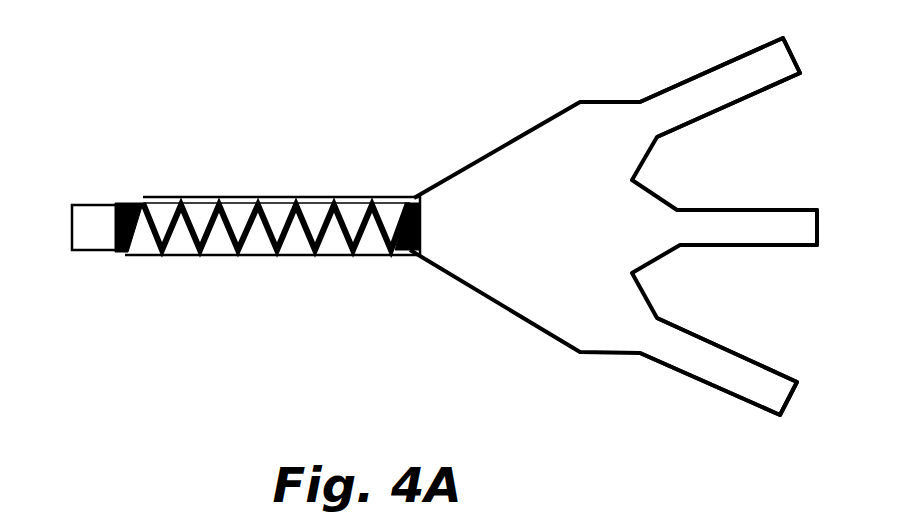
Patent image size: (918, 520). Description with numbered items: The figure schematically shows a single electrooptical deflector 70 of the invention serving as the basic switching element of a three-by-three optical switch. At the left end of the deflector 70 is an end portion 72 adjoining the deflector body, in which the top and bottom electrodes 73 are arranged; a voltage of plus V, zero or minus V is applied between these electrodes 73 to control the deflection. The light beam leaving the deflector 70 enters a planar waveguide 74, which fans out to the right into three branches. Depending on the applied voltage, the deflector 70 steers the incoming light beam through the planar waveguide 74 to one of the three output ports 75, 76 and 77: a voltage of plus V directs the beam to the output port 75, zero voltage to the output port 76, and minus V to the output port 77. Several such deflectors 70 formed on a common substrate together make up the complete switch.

The electrooptical deflector 70 is at (353, 305).
The end block 72 is at (93, 226).
The top and bottom electrodes 73 is at (215, 257).
The planar waveguide 74 is at (522, 280).
The output port 75 is at (770, 63).
The output port 76 is at (783, 238).
The output port 77 is at (768, 388).